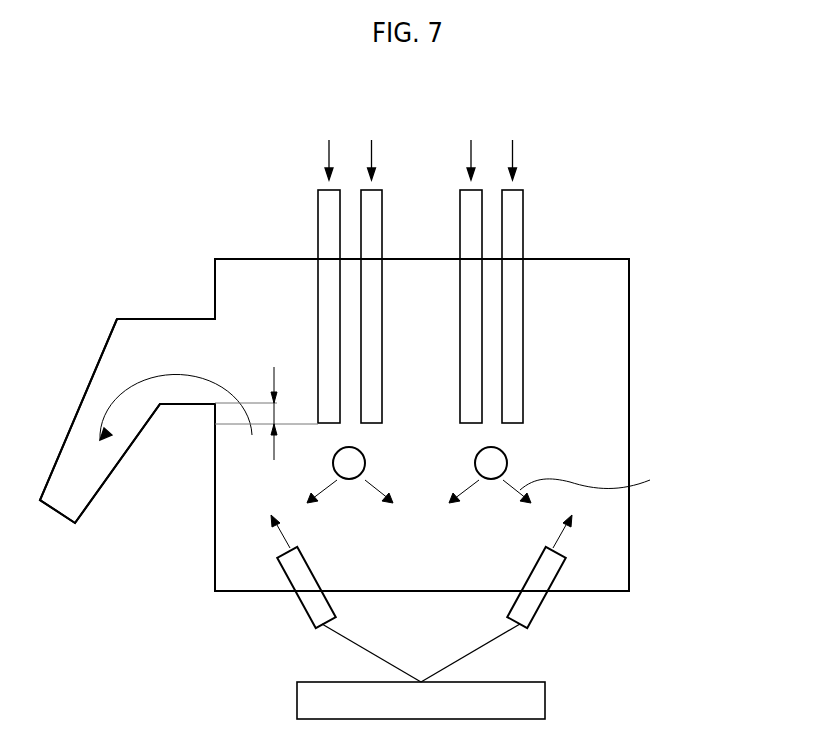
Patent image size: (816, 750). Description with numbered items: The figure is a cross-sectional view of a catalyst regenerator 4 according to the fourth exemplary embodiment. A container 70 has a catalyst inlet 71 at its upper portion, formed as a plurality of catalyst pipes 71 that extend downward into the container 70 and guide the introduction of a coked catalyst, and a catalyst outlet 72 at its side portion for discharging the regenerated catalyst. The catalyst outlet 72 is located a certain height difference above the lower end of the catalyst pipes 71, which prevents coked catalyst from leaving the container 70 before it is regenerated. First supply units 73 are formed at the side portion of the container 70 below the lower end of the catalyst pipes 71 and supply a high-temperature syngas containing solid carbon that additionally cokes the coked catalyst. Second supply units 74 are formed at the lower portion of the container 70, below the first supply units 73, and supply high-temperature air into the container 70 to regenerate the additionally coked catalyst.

The catalyst regenerator 4 is at (432, 108).
The container 70 is at (629, 545).
The catalyst inlet 71 is at (523, 208).
The catalyst outlet 72 is at (92, 487).
The first supply units 73 is at (507, 463).
The second supply units 74 is at (540, 608).